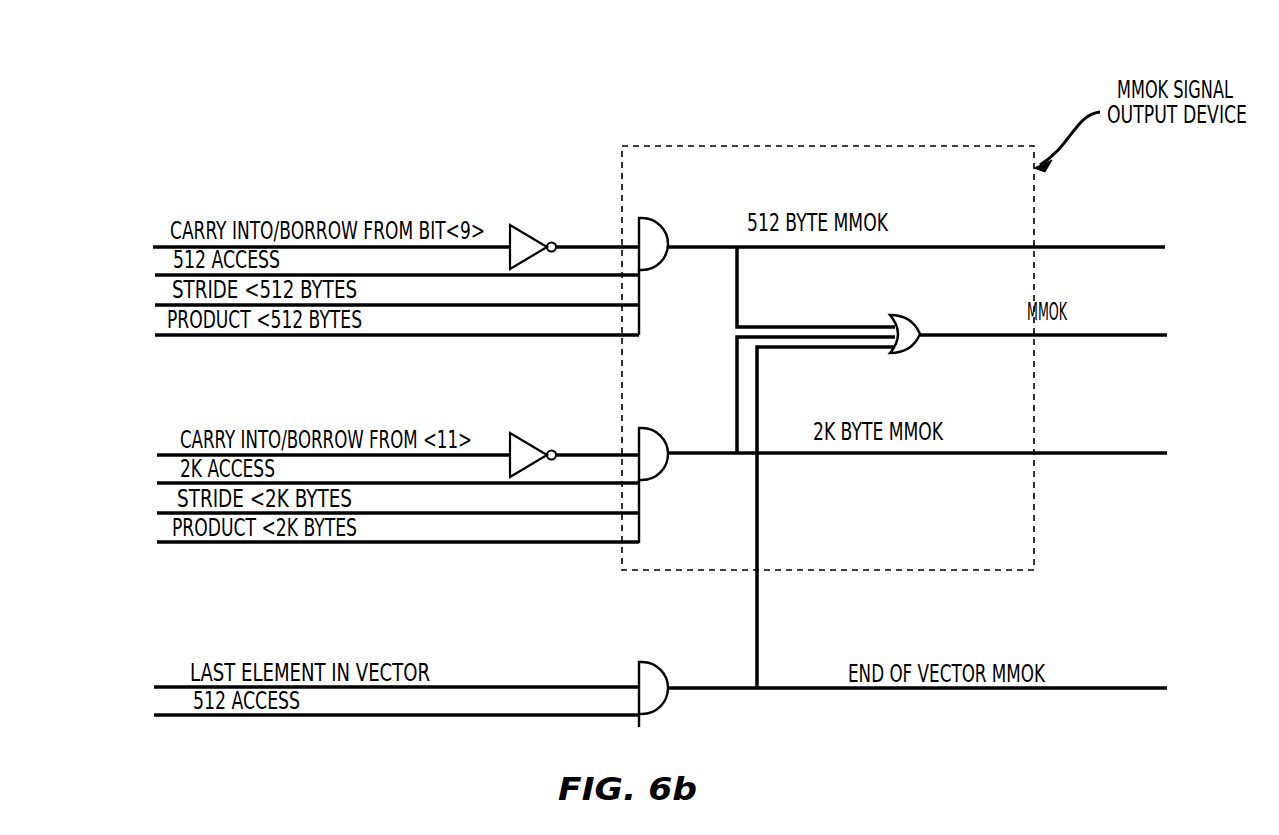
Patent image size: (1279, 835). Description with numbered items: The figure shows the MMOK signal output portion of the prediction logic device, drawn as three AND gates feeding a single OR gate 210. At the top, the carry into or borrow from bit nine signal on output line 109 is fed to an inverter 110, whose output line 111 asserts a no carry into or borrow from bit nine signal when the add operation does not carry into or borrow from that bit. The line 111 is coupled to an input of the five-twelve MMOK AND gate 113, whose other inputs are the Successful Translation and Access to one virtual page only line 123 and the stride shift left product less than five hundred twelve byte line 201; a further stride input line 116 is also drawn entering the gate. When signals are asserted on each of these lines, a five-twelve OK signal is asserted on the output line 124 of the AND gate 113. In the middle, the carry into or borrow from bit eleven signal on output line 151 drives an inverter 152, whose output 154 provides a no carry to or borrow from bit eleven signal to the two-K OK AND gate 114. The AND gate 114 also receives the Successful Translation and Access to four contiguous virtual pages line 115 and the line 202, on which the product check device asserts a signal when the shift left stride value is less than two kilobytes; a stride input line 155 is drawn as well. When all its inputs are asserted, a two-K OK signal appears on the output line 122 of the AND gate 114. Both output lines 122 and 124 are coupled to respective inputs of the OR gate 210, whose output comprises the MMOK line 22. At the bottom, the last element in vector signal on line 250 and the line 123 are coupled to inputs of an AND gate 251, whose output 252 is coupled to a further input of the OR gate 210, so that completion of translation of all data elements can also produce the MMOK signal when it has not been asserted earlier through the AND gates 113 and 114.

The output line 109 is at (497, 247).
The inverter 110 is at (542, 234).
The output line of the inverter 111 is at (586, 247).
The 512 MMOK AND gate 113 is at (655, 228).
The Successful Translation and Access to 1 virtual page only line 123 is at (157, 275).
The stride 512 bytes signal line 116 is at (157, 305).
The stride shift left product 512 byte line 201 is at (158, 335).
The output line of AND gate 113 124 is at (953, 247).
The output line of the AND gate 114 122 is at (736, 367).
The OR gate 210 is at (912, 322).
The MMOK line 22 is at (1073, 337).
The output line 151 is at (159, 455).
The inverter 152 is at (542, 442).
The output of the inverter 154 is at (586, 455).
The 2KOK AND gate 114 is at (650, 436).
The Successful Translation and Access to 4 contiguous virtual pages line 115 is at (159, 483).
The product 2K bytes signal line 155 is at (159, 513).
The line 202 is at (160, 542).
The line 250 is at (521, 687).
The AND gate 251 is at (652, 670).
The output of AND gate 251 252 is at (757, 618).